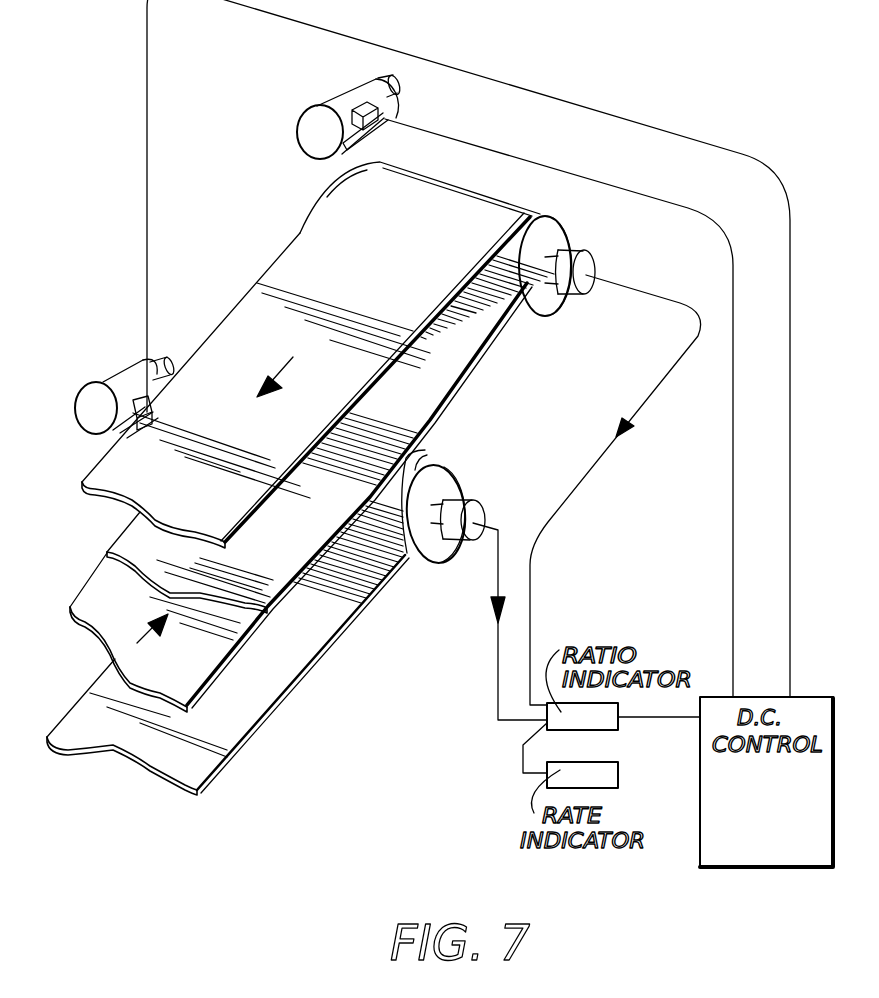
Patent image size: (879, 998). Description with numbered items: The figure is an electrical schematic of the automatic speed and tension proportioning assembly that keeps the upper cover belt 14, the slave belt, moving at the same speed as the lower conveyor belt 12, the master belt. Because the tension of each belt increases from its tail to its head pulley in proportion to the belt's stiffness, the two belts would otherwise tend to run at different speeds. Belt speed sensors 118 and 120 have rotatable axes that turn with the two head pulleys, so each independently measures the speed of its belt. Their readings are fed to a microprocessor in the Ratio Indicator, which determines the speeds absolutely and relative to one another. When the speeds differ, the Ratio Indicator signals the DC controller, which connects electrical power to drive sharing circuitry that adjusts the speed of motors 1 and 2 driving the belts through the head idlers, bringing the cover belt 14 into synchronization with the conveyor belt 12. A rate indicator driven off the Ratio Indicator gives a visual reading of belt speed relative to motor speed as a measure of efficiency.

The motor 1 is at (331, 92).
The motor 2 is at (110, 371).
The conveyor belt 12 is at (112, 622).
The cover belt 14 is at (137, 531).
The belt speed sensor 118 is at (571, 248).
The belt speed sensor 120 is at (468, 511).